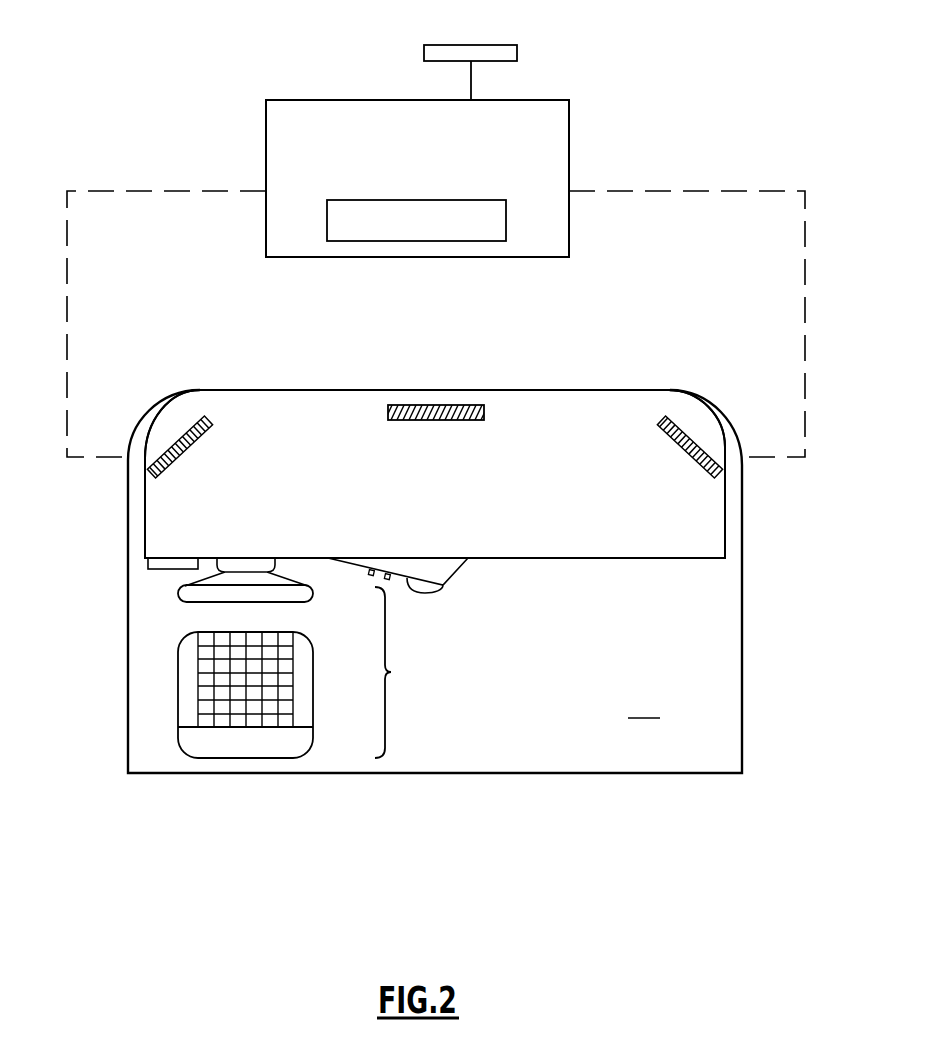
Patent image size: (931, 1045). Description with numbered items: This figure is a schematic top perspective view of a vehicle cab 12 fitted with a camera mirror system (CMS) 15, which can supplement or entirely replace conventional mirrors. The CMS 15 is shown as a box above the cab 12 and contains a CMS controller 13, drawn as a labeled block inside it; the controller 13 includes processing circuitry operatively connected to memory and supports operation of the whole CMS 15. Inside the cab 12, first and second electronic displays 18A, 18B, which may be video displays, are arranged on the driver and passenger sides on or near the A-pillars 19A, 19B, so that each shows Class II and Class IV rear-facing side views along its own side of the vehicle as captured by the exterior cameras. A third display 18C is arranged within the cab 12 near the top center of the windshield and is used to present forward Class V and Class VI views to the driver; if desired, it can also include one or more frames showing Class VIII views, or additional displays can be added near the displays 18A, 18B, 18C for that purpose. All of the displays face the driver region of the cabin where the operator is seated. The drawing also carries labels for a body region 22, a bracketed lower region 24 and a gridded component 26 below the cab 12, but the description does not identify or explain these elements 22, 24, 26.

The vehicle cab 12 is at (435, 533).
The CMS controller 13 is at (327, 230).
The camera mirror system 15 is at (569, 113).
The first electronic display 18A is at (178, 432).
The second electronic display 18B is at (693, 432).
The third display 18C is at (502, 45).
The A-pillar 19A is at (145, 428).
The A-pillar 19B is at (722, 428).
The vehicle body 22 is at (435, 581).
The undercarriage region 24 is at (397, 672).
The grille 26 is at (300, 682).